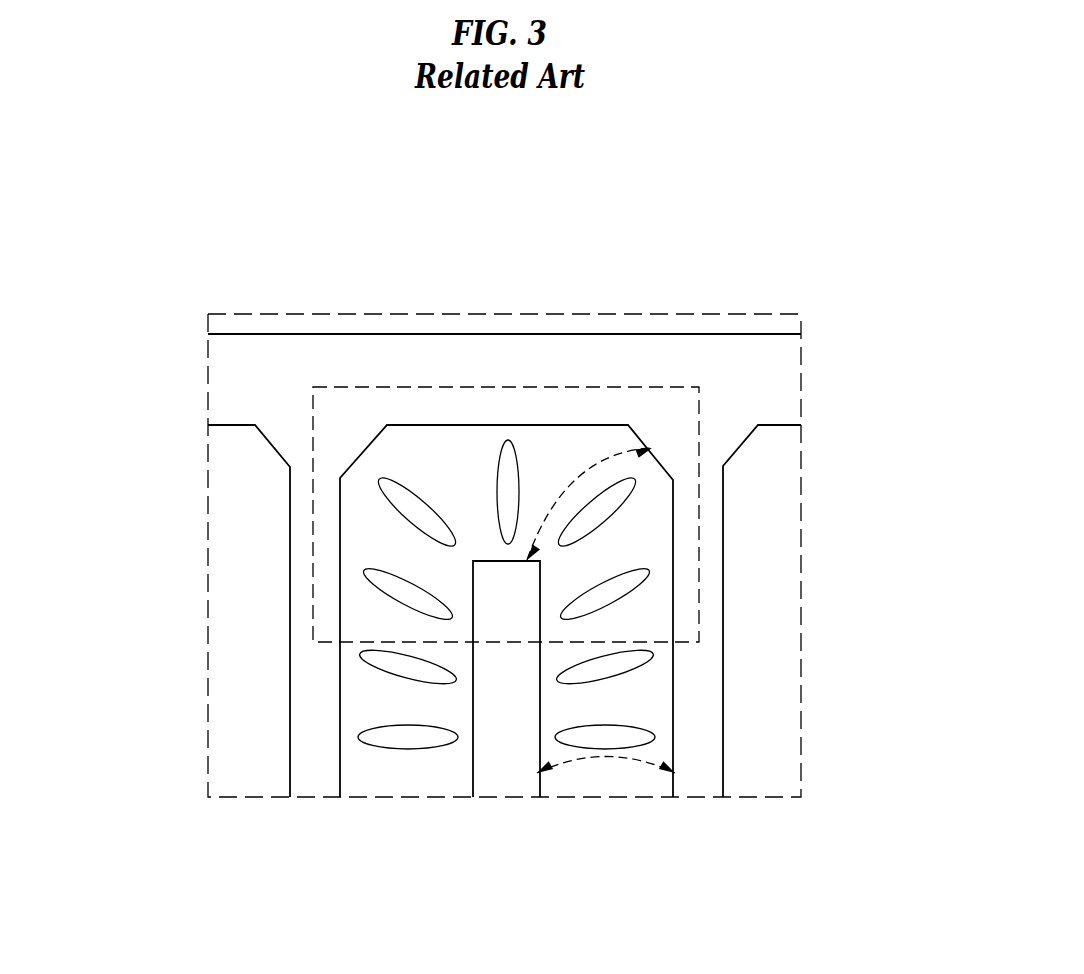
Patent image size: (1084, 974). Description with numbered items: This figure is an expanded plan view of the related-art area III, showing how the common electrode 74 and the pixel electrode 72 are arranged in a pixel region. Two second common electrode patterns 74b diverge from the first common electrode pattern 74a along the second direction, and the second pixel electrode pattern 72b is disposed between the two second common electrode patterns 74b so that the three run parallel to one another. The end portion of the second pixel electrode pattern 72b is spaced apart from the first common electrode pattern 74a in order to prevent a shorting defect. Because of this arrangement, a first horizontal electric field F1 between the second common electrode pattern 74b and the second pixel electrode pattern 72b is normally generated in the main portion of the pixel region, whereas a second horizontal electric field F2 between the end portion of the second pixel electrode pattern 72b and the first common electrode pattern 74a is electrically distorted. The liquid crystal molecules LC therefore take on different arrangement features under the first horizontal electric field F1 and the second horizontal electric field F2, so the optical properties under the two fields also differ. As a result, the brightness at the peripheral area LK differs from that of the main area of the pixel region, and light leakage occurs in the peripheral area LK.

The common electrode 74 is at (268, 316).
The first common electrode pattern 74a is at (662, 352).
The second common electrode pattern 74b is at (290, 704).
The second pixel electrode pattern 72b is at (494, 749).
The pixel electrode 72 is at (507, 782).
The liquid crystal molecules LC is at (428, 486).
The peripheral area LK is at (512, 372).
The first horizontal electric field F1 is at (605, 758).
The second horizontal electric field F2 is at (595, 473).
The area III is at (750, 300).